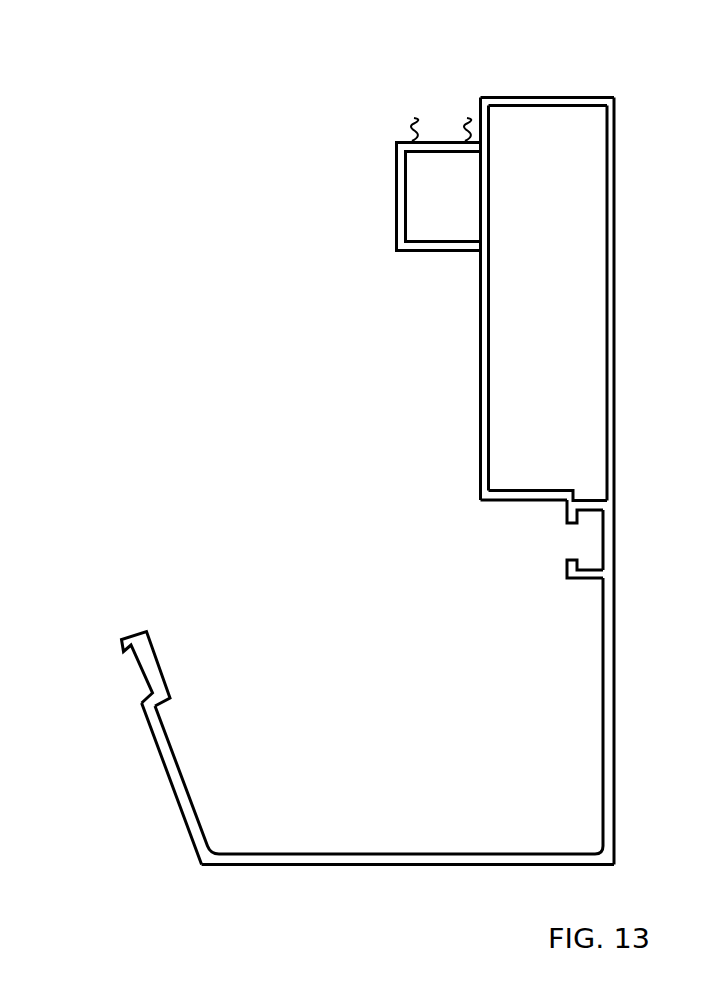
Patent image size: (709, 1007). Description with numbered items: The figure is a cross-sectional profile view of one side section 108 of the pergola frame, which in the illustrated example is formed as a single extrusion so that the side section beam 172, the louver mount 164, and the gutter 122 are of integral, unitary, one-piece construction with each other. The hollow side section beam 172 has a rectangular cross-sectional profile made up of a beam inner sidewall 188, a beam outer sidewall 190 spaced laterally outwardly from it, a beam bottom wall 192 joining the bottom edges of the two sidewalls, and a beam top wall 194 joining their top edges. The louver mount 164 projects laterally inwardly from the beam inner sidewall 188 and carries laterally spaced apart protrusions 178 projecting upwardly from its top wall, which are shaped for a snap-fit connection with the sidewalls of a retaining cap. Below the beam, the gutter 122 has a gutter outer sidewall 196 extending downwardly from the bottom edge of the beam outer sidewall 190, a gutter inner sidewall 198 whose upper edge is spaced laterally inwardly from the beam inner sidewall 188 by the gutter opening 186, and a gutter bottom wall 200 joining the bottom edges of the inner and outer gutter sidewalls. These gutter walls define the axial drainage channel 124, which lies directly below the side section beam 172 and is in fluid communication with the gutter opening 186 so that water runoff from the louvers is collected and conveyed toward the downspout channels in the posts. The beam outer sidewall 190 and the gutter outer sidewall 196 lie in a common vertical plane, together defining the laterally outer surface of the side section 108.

The side section 108 is at (231, 106).
The gutter 122 is at (135, 816).
The axial drainage channel 124 is at (309, 786).
The louver mount 164 is at (372, 261).
The side section beam 172 is at (454, 476).
The protrusions 178 is at (410, 122).
The gutter opening 186 is at (306, 546).
The beam inner sidewall 188 is at (484, 366).
The beam outer sidewall 190 is at (614, 364).
The beam bottom wall 192 is at (524, 497).
The beam top wall 194 is at (545, 100).
The gutter outer sidewall 196 is at (614, 692).
The gutter inner sidewall 198 is at (162, 741).
The gutter bottom wall 200 is at (402, 866).